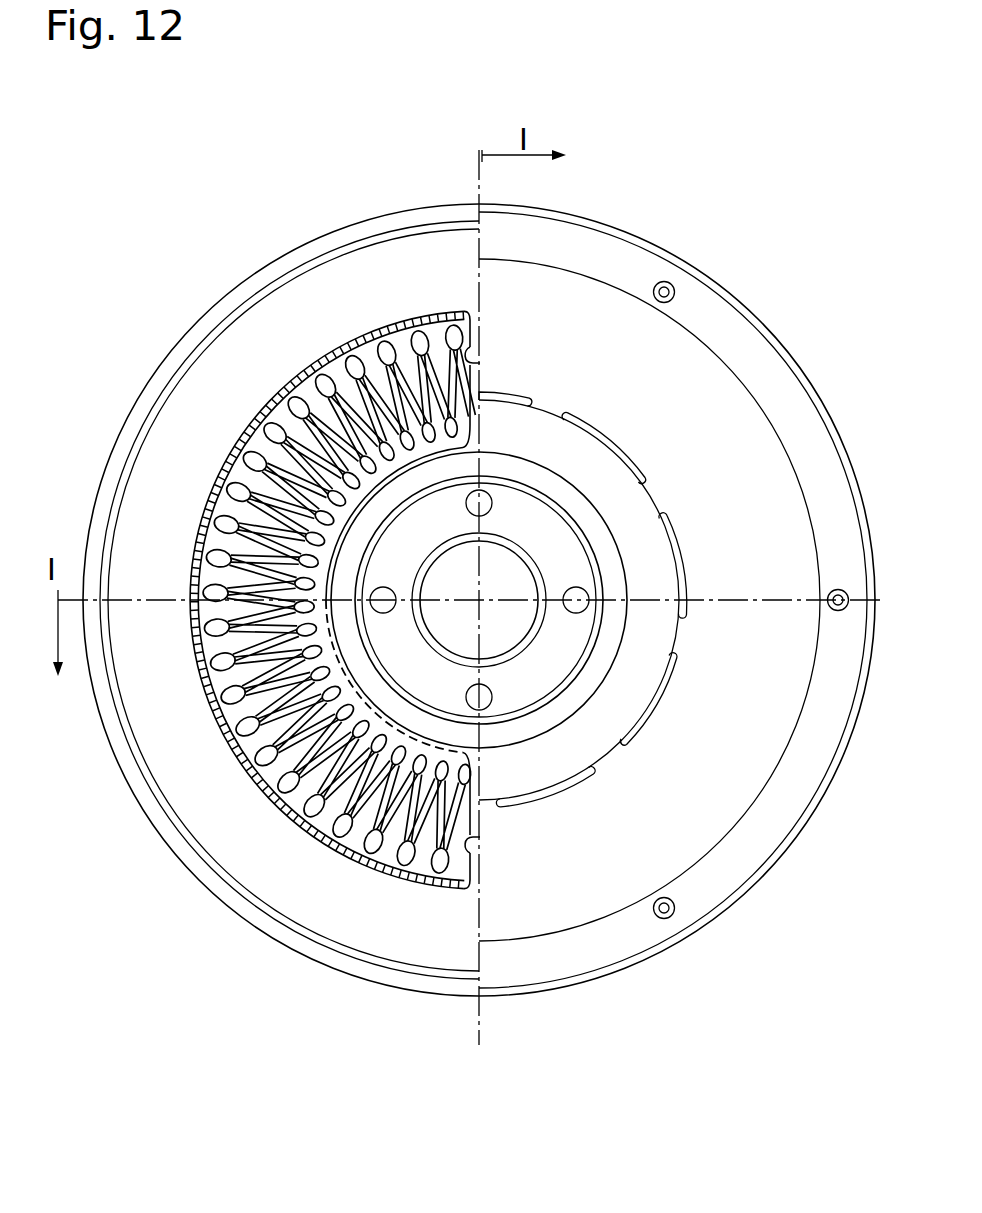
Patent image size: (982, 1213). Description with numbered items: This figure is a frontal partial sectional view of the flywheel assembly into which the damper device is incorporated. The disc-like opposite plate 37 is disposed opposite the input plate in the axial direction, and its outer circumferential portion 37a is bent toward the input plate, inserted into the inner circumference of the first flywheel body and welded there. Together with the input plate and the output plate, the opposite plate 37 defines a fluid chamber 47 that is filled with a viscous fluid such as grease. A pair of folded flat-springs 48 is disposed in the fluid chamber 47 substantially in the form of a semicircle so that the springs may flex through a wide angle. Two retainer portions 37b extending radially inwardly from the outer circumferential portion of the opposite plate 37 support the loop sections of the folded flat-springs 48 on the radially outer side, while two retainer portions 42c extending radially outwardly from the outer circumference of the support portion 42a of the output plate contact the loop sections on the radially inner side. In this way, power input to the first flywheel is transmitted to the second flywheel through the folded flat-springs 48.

The opposite plate 37 is at (430, 302).
The outer circumferential portion of the opposite plate 37a is at (372, 338).
The retainer portions 37b is at (467, 354).
The support portion of the output plate 42a is at (503, 447).
The retainer portions 42c is at (510, 398).
The fluid chamber 47 is at (306, 421).
The folded flat-springs 48 is at (276, 393).